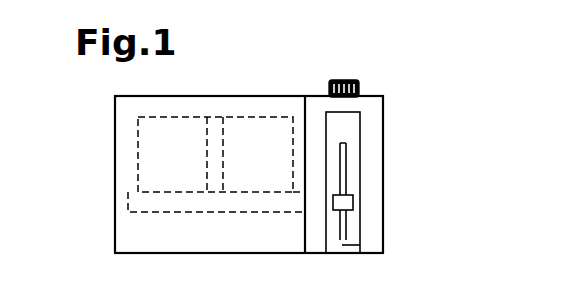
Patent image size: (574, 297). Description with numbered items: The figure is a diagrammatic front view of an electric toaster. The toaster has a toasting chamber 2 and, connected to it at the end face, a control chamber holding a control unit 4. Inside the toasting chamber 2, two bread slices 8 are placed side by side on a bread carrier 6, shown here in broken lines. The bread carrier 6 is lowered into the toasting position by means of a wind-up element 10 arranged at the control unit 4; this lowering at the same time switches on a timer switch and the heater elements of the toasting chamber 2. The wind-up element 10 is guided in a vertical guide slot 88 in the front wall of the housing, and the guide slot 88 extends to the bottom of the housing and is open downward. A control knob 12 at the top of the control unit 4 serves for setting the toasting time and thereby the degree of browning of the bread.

The toasting chamber 2 is at (115, 150).
The control unit 4 is at (383, 157).
The bread carrier 6 is at (128, 214).
The bread slices 8 is at (223, 117).
The wind-up element 10 is at (353, 202).
The control knob 12 is at (352, 80).
The guide slot 88 is at (340, 240).